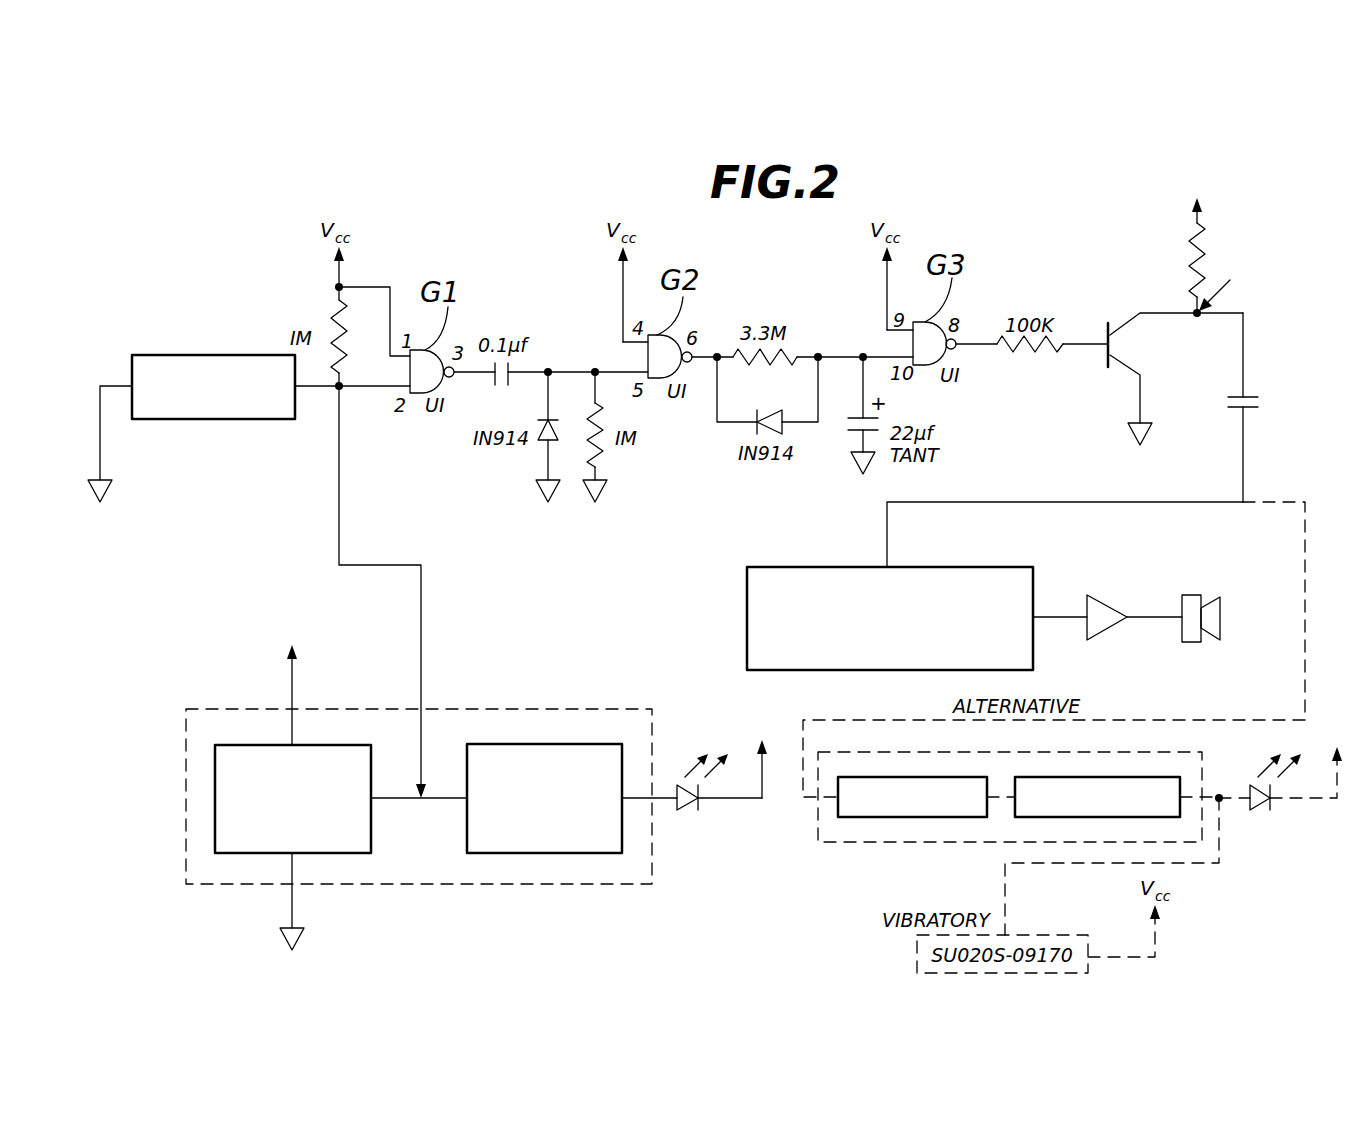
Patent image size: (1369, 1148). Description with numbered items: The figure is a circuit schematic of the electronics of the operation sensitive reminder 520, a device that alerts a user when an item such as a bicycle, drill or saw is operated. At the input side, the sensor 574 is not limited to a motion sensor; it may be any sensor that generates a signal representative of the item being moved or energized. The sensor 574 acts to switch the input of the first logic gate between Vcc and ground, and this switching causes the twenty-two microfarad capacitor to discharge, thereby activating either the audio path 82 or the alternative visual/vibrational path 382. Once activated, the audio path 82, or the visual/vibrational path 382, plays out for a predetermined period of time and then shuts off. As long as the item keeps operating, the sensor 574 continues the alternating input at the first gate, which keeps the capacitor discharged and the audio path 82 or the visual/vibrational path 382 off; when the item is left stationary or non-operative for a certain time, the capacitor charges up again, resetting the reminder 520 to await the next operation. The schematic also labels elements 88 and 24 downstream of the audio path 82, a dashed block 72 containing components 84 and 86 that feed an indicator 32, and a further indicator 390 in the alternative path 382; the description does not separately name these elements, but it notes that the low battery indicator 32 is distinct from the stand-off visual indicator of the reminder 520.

The sensor 574 is at (225, 355).
The operation sensitive reminder 520 is at (1276, 234).
The audio path 82 is at (947, 567).
The amplifier 88 is at (1105, 600).
The speaker 24 is at (1192, 595).
The blinking LED driver circuit 72 is at (490, 709).
The voltage detector 84 is at (240, 745).
The on gate RC network 86 is at (555, 853).
The low battery indicator 32 is at (702, 806).
The visual/vibrational path 382 is at (940, 843).
The alternative red blinking LED 390 is at (1272, 806).